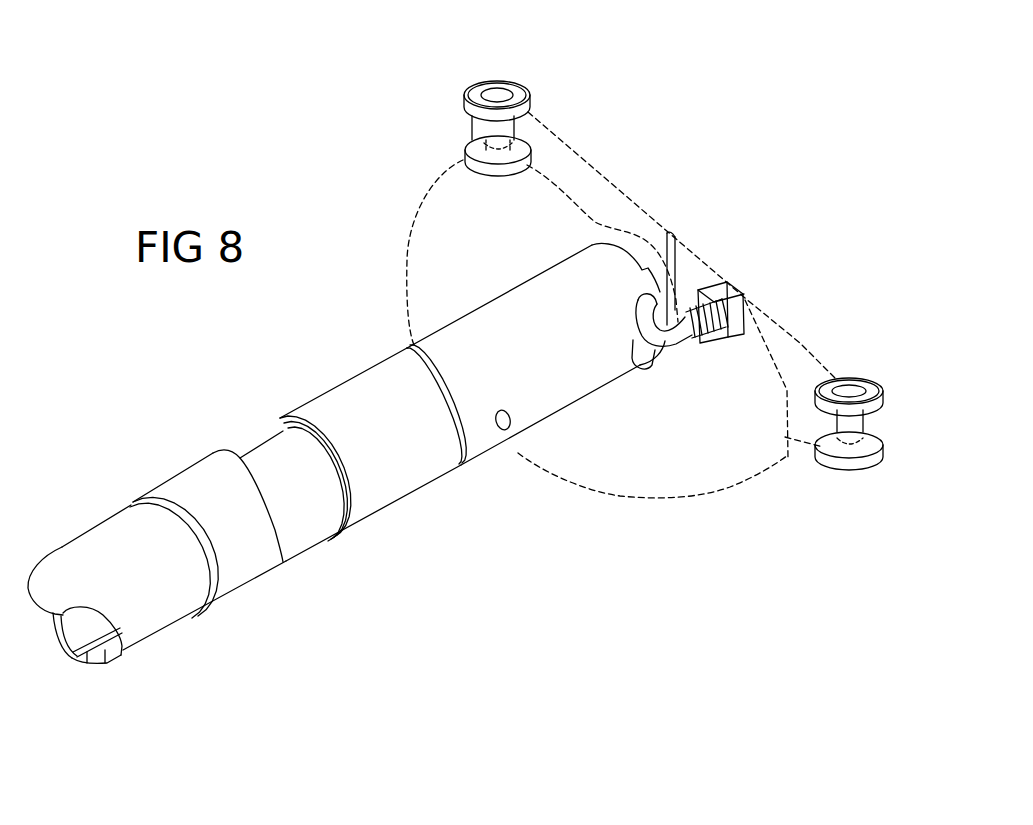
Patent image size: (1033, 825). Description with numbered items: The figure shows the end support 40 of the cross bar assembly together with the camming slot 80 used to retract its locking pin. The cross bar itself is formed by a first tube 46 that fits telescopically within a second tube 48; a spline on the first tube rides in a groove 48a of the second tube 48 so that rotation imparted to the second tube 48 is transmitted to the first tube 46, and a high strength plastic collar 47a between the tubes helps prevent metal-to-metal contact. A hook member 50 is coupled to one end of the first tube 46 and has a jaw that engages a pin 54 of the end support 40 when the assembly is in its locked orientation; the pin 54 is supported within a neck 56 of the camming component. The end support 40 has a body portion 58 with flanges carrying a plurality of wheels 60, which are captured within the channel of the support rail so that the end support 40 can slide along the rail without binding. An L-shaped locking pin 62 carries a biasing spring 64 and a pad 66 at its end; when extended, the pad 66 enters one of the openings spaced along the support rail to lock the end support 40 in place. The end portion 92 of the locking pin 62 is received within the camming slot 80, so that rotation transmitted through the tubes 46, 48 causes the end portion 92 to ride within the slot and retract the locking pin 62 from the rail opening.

The end support 40 is at (270, 356).
The first tube 46 is at (297, 536).
The collar 47a is at (233, 594).
The second tube 48 is at (172, 630).
The groove 48a is at (68, 662).
The hook member 50 is at (416, 492).
The pin 54 is at (512, 430).
The neck 56 is at (464, 338).
The body portion 58 is at (675, 478).
The wheels 60 is at (463, 160).
The locking pin 62 is at (690, 346).
The biasing spring 64 is at (685, 312).
The pad 66 is at (717, 293).
The camming slot 80 is at (640, 366).
The end portion of locking pin 92 is at (677, 255).